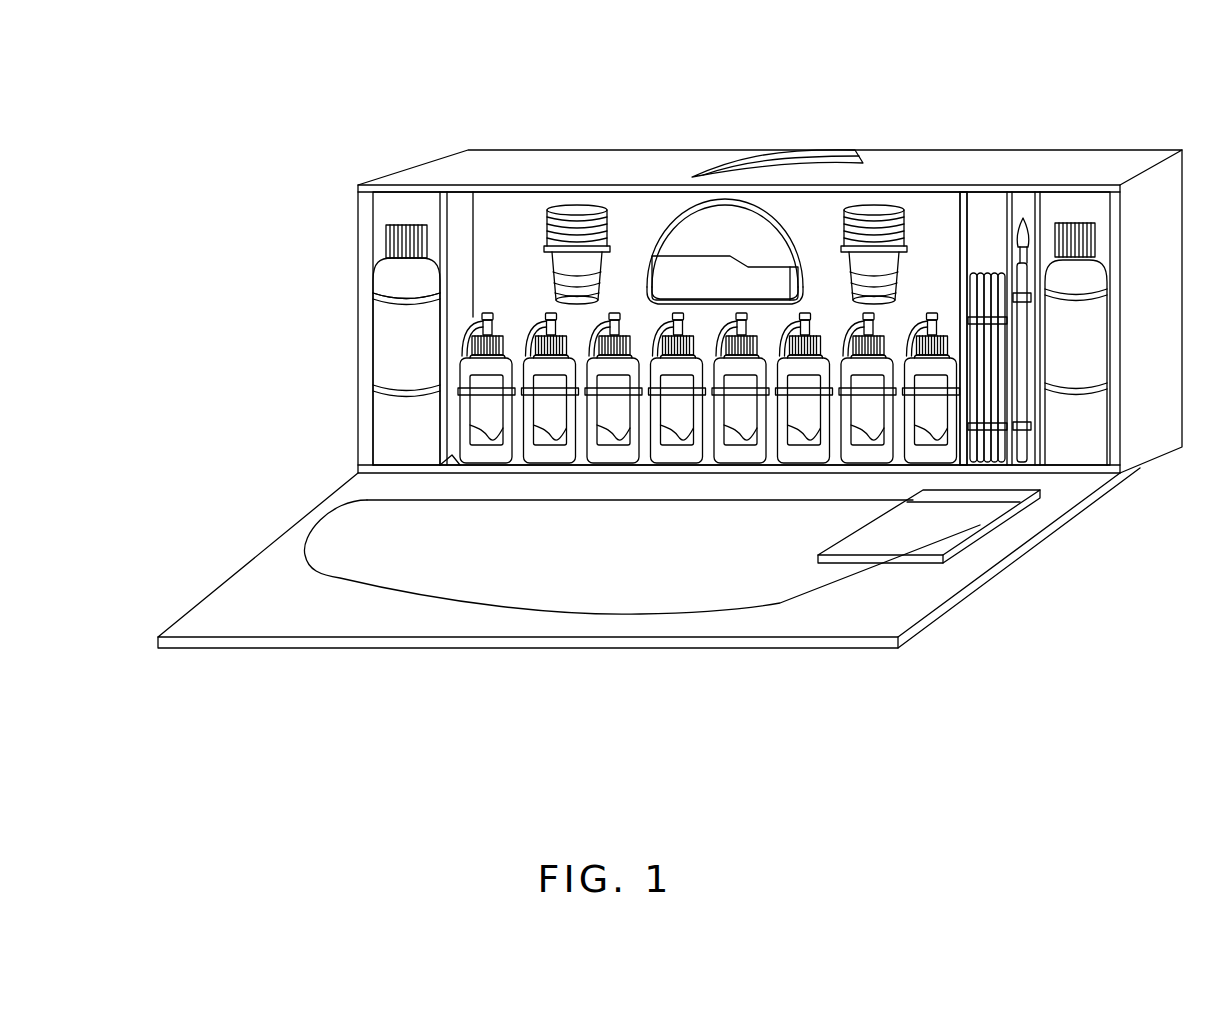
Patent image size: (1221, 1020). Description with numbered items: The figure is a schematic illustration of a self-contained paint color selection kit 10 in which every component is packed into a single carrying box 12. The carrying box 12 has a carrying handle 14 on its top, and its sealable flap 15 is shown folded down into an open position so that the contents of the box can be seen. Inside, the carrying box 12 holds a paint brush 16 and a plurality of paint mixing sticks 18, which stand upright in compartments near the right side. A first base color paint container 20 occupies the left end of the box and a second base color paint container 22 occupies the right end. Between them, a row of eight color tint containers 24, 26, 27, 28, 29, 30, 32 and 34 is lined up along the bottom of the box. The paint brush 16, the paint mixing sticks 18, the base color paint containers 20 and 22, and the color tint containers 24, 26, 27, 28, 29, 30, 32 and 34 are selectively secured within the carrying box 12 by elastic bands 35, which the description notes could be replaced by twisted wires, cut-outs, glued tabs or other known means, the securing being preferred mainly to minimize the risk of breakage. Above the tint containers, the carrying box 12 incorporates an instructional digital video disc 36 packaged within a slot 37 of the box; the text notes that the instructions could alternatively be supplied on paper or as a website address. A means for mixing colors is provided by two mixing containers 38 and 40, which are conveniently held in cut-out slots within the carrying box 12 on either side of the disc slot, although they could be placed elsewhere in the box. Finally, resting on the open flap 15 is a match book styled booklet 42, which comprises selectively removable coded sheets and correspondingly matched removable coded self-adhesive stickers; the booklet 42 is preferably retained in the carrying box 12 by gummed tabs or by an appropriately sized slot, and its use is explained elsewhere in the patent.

The self-contained paint color selection kit 10 is at (425, 125).
The carrying box 12 is at (1143, 430).
The carrying handle 14 is at (715, 170).
The sealable flap 15 is at (367, 640).
The paint brush 16 is at (1022, 445).
The paint mixing sticks 18 is at (996, 267).
The first base color paint container 20 is at (393, 428).
The second base color paint container 22 is at (1080, 438).
The color tint container 24 is at (472, 455).
The color tint container 26 is at (543, 455).
The color tint container 27 is at (604, 453).
The color tint container 28 is at (677, 452).
The color tint container 29 is at (735, 453).
The color tint container 30 is at (800, 453).
The color tint container 32 is at (898, 347).
The color tint container 34 is at (963, 347).
The elastic bands 35 is at (493, 392).
The instructional digital video disc 36 is at (697, 233).
The slot 37 is at (683, 257).
The mixing container 38 is at (567, 212).
The mixing container 40 is at (876, 223).
The match book styled booklet 42 is at (858, 537).